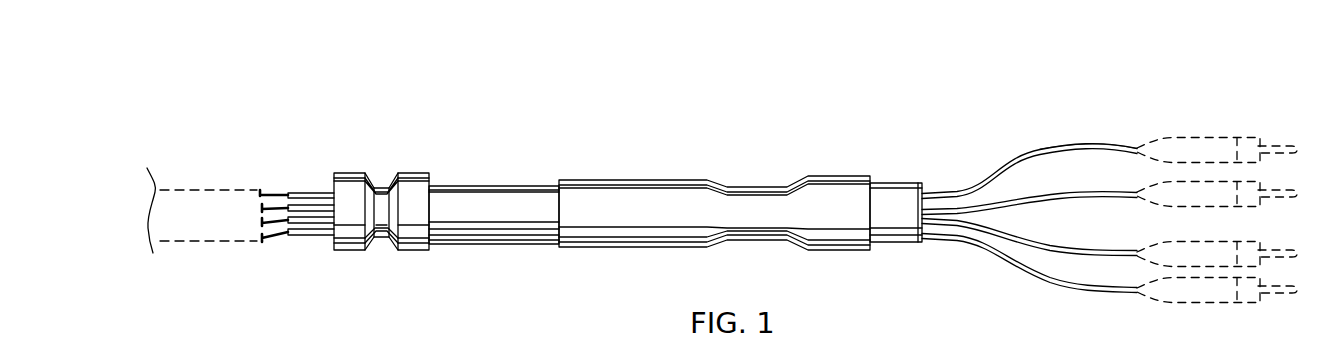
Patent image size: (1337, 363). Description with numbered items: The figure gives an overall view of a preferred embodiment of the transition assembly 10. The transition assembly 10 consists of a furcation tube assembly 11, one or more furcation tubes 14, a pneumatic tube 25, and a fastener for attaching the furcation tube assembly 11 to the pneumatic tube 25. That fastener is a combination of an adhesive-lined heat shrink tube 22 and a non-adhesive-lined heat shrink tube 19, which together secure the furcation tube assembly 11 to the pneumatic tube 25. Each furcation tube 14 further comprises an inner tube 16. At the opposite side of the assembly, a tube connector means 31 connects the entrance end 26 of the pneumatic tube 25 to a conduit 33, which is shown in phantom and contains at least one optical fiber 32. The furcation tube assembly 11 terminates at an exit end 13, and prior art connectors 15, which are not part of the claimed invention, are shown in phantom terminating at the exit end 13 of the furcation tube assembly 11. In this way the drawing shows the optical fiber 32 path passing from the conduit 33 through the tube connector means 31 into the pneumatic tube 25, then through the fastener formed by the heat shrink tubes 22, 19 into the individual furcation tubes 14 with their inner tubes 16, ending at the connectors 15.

The transition assembly 10 is at (635, 132).
The furcation tube assembly 11 is at (1060, 93).
The exit end 13 is at (1078, 146).
The furcation tubes 14 is at (958, 193).
The prior art connectors 15 is at (1203, 137).
The inner tube 16 is at (303, 193).
The non-adhesive-lined heat shrink tube 19 is at (897, 183).
The adhesive-lined heat shrink tube 22 is at (822, 176).
The pneumatic tube 25 is at (520, 200).
The entrance end 26 is at (432, 186).
The tube connector means 31 is at (407, 172).
The optical fiber 32 is at (273, 192).
The conduit 33 is at (212, 190).